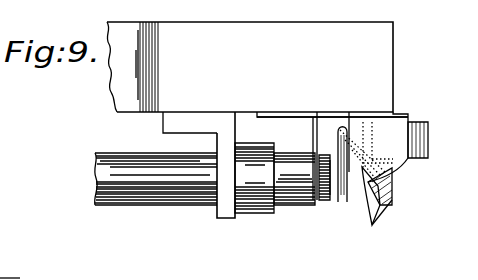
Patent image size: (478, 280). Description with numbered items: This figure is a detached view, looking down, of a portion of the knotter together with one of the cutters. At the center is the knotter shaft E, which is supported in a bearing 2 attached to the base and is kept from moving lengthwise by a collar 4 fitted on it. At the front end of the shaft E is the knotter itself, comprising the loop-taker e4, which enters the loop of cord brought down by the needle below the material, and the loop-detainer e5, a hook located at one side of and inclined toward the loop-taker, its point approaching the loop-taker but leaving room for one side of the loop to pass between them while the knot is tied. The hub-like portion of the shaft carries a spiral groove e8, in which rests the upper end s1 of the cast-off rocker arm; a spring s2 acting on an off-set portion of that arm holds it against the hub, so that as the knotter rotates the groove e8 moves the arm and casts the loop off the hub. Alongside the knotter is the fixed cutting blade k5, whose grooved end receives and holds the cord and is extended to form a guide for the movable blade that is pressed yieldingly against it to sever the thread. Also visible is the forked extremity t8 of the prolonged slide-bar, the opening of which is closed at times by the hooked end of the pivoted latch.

The knotter shaft E is at (124, 207).
The bearing 2 is at (223, 203).
The collar 4 is at (253, 213).
The fixed cutting blade k5 is at (315, 122).
The upper end of rocker-arm s1 is at (330, 165).
The spring s2 is at (430, 127).
The spiral groove e8 is at (393, 183).
The loop-detainer e5 is at (385, 199).
The loop-taker e4 is at (388, 204).
The forked extremity t8 is at (10, 278).